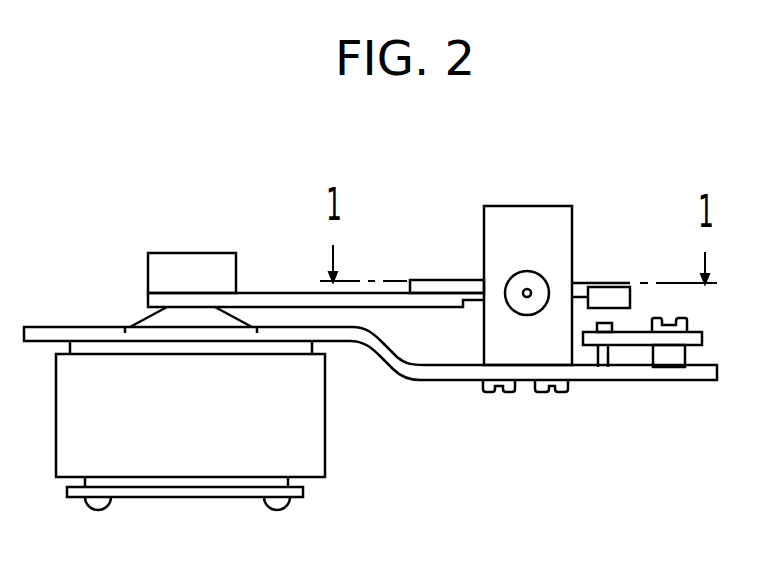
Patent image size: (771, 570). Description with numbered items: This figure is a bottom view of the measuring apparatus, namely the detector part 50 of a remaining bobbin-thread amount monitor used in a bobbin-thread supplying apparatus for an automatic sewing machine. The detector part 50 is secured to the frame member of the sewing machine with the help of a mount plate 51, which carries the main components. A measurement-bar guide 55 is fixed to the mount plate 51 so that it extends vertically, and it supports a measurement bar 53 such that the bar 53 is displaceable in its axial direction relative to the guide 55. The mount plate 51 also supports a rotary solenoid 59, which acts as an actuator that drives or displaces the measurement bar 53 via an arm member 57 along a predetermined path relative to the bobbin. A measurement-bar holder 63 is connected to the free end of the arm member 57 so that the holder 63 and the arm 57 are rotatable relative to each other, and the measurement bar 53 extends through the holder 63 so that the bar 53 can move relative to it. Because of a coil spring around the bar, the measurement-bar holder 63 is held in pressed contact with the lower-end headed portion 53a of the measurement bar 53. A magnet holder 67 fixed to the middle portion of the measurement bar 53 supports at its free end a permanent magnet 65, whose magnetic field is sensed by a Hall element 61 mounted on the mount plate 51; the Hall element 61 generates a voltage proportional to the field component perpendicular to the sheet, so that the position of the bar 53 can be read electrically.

The detector part 50 is at (138, 187).
The mount plate 51 is at (667, 372).
The measurement bar 53 is at (527, 287).
The headed portion 53a is at (510, 304).
The measurement-bar guide 55 is at (534, 218).
The arm member 57 is at (270, 297).
The rotary solenoid 59 is at (312, 444).
The Hall element 61 is at (595, 326).
The measurement-bar holder 63 is at (429, 288).
The permanent magnet 65 is at (613, 297).
The magnet holder 67 is at (585, 289).